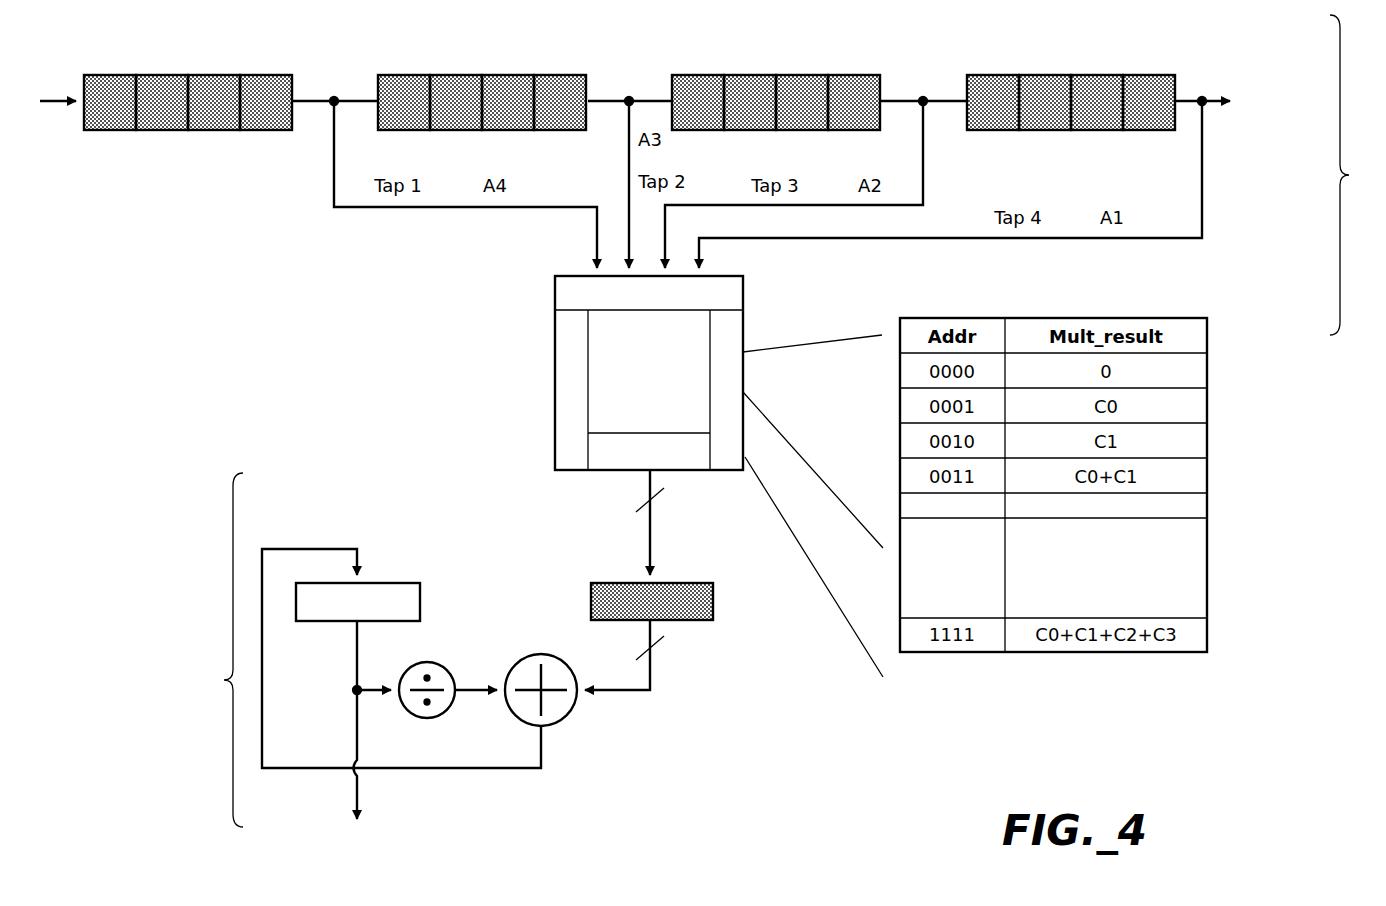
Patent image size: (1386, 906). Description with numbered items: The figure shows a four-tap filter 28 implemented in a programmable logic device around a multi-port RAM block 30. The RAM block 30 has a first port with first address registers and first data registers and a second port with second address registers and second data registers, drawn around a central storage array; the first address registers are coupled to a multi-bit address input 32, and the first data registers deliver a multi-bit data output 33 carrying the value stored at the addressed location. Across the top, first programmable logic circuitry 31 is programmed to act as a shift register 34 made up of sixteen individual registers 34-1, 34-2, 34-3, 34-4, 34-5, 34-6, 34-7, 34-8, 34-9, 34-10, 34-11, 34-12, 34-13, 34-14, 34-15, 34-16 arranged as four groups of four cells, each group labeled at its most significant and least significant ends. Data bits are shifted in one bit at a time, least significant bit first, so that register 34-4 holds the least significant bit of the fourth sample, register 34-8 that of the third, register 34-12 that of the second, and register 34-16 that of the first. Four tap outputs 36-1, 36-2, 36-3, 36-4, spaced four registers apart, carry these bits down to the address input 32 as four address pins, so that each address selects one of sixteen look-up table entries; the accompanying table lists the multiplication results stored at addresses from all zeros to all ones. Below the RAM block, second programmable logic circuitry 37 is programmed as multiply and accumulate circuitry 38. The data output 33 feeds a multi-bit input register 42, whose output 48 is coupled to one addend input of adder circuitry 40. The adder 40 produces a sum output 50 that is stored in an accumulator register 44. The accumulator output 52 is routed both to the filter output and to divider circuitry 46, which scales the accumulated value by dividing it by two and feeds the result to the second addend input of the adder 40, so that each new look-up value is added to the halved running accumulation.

The 4-tap filter 28 is at (202, 328).
The RAM block 30 is at (555, 354).
The first programmable logic circuitry 31 is at (1356, 175).
The multi-bit address input 32 is at (588, 228).
The multi-bit data output 33 is at (650, 535).
The shift register 34 is at (1255, 80).
The register 34-1 is at (92, 75).
The register 34-2 is at (176, 75).
The register 34-3 is at (215, 75).
The register 34-4 is at (280, 75).
The register 34-5 is at (390, 75).
The register 34-6 is at (468, 75).
The register 34-7 is at (510, 75).
The register 34-8 is at (575, 75).
The register 34-9 is at (683, 75).
The register 34-10 is at (760, 75).
The register 34-11 is at (793, 75).
The register 34-12 is at (850, 75).
The register 34-13 is at (975, 75).
The register 34-14 is at (1055, 75).
The register 34-15 is at (1095, 75).
The register 34-16 is at (1165, 75).
The first tap output 36-1 is at (334, 150).
The second tap output 36-2 is at (629, 150).
The third tap output 36-3 is at (923, 165).
The fourth tap output 36-4 is at (1202, 165).
The second programmable logic circuitry 37 is at (220, 650).
The multiply and accumulate circuitry 38 is at (716, 742).
The adder circuitry 40 is at (565, 655).
The multi-bit input register 42 is at (713, 598).
The accumulator register 44 is at (420, 598).
The divider circuitry 46 is at (432, 662).
The multi-bit output of the input register 48 is at (653, 676).
The multi-bit sum output 50 is at (262, 667).
The multi-bit output of the accumulator register 52 is at (358, 805).